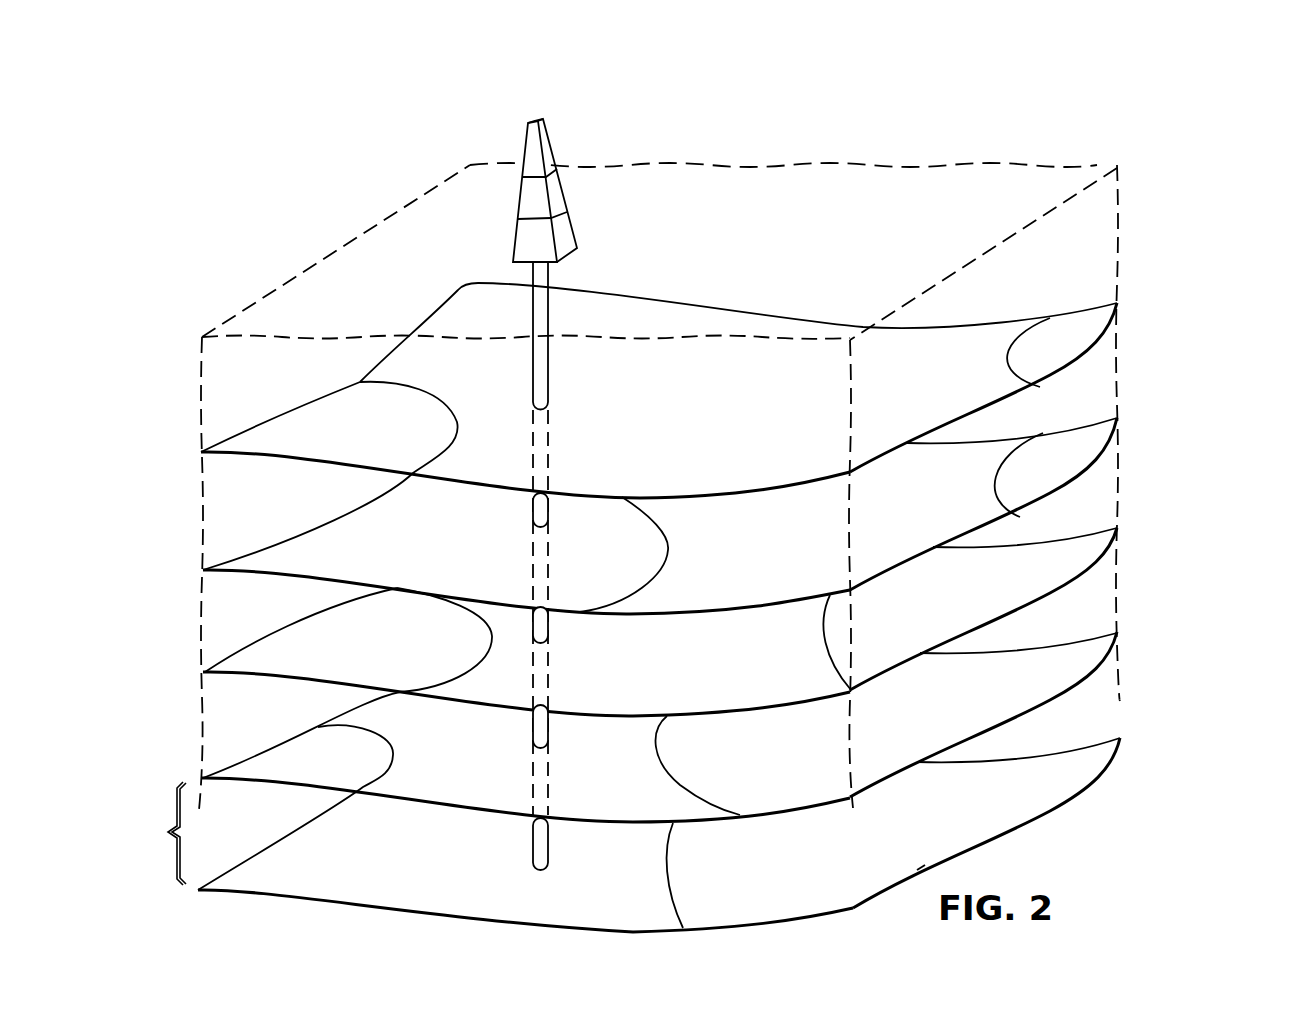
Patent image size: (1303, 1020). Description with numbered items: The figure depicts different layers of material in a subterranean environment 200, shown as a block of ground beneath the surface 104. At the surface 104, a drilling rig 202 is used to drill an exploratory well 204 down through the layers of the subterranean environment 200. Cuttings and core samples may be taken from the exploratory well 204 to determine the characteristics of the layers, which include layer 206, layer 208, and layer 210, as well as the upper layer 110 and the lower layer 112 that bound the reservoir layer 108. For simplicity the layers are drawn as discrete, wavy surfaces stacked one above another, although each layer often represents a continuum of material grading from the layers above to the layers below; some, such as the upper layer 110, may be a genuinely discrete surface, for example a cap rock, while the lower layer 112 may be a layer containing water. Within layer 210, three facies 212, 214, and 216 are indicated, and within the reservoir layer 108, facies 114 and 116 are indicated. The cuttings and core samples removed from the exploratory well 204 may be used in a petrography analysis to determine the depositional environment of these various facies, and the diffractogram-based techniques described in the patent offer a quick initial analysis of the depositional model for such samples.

The subterranean environment 200 is at (356, 69).
The surface 104 is at (371, 233).
The drilling rig 202 is at (523, 143).
The exploratory well 204 is at (548, 372).
The layer 206 is at (953, 385).
The layer 208 is at (947, 508).
The facies 212 is at (967, 602).
The facies 214 is at (699, 672).
The facies 216 is at (407, 657).
The facies 116 is at (282, 832).
The reservoir layer 108 is at (154, 833).
The layer 210 is at (1087, 533).
The upper layer 110 is at (1080, 640).
The facies 114 is at (1105, 712).
The lower layer 112 is at (1077, 782).